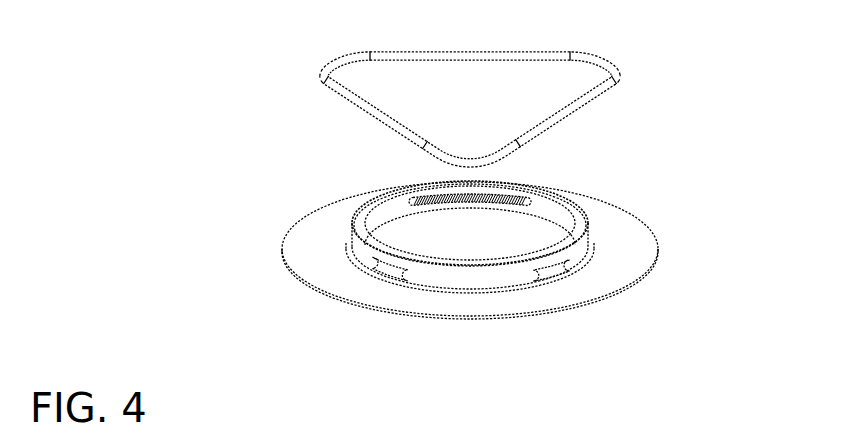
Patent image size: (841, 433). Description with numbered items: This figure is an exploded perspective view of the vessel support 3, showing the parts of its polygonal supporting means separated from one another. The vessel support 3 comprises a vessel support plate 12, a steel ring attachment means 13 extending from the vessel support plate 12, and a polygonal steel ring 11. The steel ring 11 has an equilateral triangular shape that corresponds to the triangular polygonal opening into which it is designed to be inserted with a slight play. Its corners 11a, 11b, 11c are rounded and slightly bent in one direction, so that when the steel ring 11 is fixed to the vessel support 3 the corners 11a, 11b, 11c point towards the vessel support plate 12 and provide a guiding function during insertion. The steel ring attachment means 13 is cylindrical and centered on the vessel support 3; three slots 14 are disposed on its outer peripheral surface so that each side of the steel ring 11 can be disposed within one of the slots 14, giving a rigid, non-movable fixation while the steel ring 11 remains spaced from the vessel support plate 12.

The vessel support 3 is at (661, 279).
The polygonal steel ring 11 is at (378, 121).
The corner of the steel ring 11a is at (335, 58).
The corner of the steel ring 11b is at (625, 74).
The corner of the steel ring 11c is at (503, 162).
The vessel support plate 12 is at (490, 307).
The steel ring attachment means 13 is at (588, 226).
The slots 14 is at (377, 265).